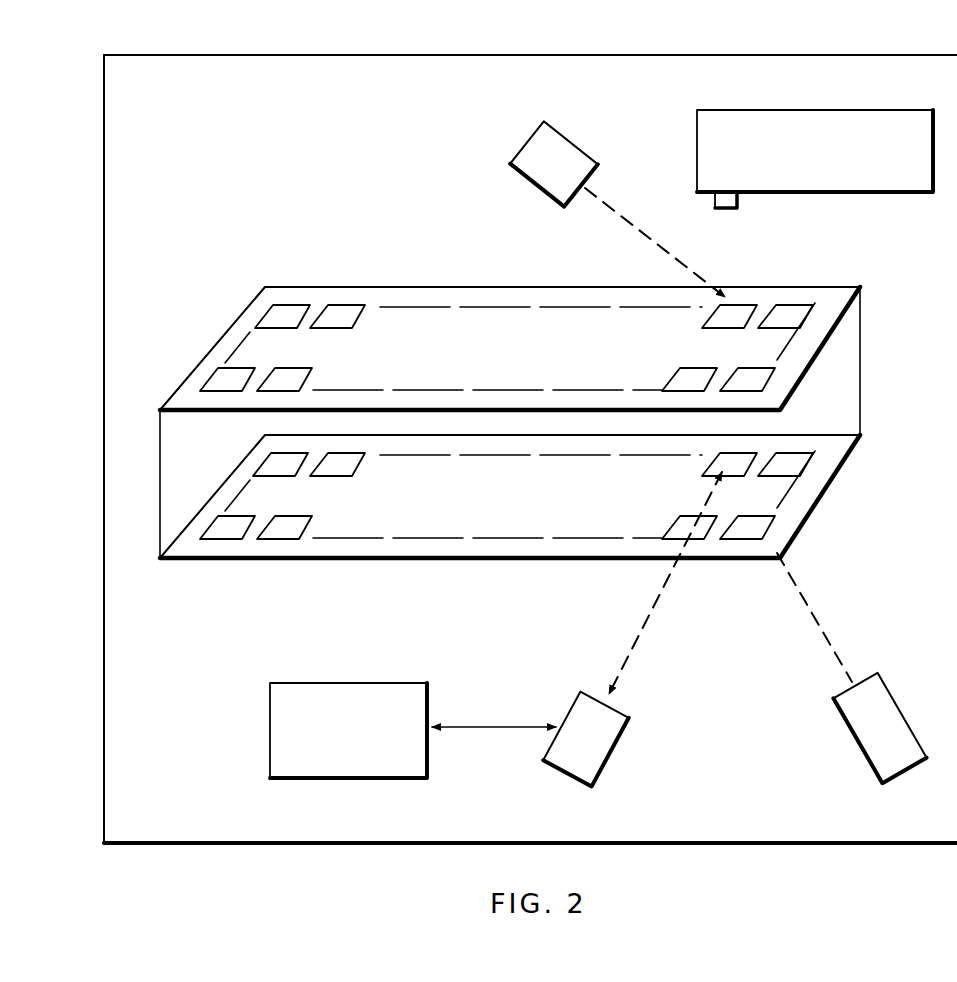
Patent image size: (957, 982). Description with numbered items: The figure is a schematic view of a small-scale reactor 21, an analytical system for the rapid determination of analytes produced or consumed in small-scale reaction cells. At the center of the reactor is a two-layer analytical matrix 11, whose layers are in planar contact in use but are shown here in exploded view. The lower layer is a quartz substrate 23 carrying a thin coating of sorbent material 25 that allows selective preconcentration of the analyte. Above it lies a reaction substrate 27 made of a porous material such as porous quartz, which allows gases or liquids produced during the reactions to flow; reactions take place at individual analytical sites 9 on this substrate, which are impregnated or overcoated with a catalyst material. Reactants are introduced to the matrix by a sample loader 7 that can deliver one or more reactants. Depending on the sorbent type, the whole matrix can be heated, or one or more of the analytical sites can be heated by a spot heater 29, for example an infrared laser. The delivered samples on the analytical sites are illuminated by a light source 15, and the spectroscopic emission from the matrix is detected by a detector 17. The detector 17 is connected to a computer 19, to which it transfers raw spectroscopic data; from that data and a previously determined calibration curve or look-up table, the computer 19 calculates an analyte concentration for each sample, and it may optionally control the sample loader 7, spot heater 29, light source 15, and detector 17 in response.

The small-scale reactor 21 is at (102, 138).
The sample loader 7 is at (778, 110).
The spot heater 29 is at (562, 135).
The reaction substrate 27 is at (240, 317).
The analytical sites 9 is at (350, 303).
The two-layer analytical matrix 11 is at (257, 413).
The quartz substrate 23 is at (243, 562).
The sorbent material 25 is at (382, 550).
The computer 19 is at (338, 683).
The detector 17 is at (611, 750).
The light source 15 is at (897, 700).